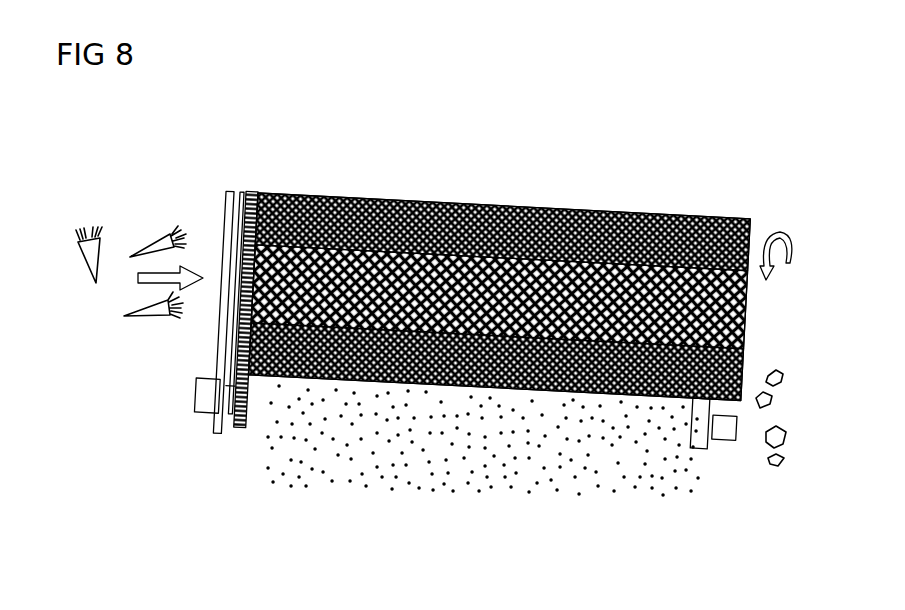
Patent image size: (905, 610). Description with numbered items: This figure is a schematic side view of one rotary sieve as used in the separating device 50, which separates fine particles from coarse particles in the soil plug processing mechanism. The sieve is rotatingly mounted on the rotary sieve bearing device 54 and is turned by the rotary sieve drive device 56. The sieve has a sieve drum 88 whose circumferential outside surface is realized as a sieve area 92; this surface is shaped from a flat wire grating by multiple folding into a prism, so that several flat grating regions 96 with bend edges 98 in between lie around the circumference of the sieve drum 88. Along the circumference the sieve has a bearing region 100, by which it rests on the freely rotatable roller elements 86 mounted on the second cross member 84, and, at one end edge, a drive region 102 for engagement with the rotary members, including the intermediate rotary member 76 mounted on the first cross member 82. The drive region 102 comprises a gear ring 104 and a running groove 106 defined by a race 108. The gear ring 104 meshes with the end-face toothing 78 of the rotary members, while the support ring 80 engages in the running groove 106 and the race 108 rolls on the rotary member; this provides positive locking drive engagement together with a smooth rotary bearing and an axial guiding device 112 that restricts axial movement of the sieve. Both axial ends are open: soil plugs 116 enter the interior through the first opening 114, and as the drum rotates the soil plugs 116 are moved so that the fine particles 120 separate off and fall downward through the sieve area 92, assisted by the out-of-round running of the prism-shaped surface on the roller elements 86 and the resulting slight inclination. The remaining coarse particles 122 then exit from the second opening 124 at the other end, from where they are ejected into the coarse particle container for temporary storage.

The separating device 50 is at (178, 136).
The rotary sieve bearing device 54 is at (184, 406).
The rotary sieve drive device 56 is at (227, 432).
The intermediate rotary member 76 is at (196, 422).
The end-face toothing 78 is at (238, 398).
The support ring 80 is at (196, 373).
The first cross member 82 is at (180, 395).
The second cross member 84 is at (728, 456).
The roller element 86 is at (694, 453).
The sieve drum 88 is at (500, 274).
The sieve area 92 is at (500, 276).
The flat grating region 96 is at (504, 205).
The bend edge 98 is at (502, 242).
The bearing region 100 is at (449, 307).
The drive region 102 is at (236, 156).
The gear ring 104 is at (270, 283).
The running groove 106 is at (215, 272).
The race 108 is at (190, 296).
The axial guiding device 112 is at (196, 338).
The first opening 114 is at (214, 213).
The soil plug 116 is at (100, 304).
The fine particles 120 is at (399, 462).
The coarse particles 122 is at (782, 454).
The second opening 124 is at (752, 303).